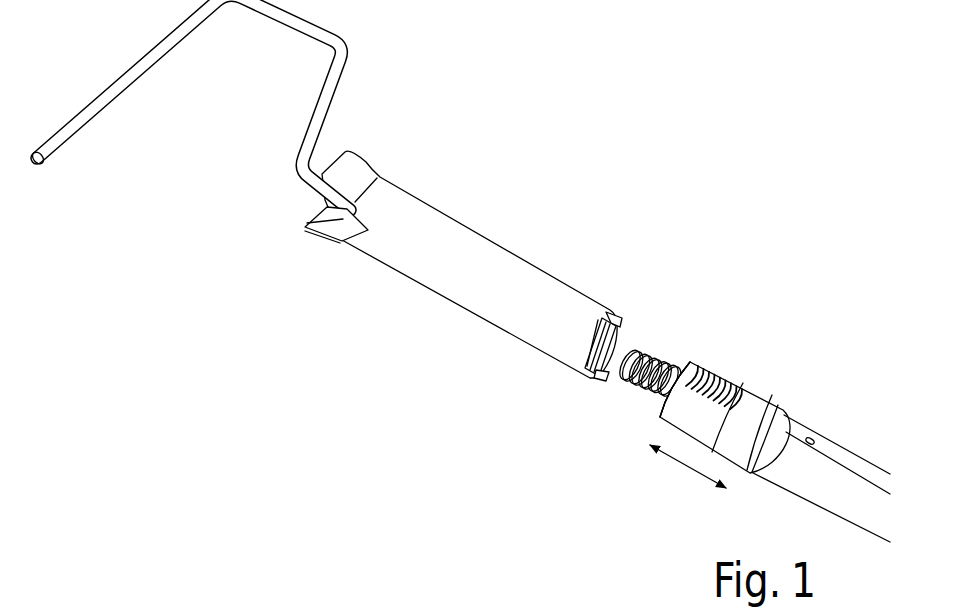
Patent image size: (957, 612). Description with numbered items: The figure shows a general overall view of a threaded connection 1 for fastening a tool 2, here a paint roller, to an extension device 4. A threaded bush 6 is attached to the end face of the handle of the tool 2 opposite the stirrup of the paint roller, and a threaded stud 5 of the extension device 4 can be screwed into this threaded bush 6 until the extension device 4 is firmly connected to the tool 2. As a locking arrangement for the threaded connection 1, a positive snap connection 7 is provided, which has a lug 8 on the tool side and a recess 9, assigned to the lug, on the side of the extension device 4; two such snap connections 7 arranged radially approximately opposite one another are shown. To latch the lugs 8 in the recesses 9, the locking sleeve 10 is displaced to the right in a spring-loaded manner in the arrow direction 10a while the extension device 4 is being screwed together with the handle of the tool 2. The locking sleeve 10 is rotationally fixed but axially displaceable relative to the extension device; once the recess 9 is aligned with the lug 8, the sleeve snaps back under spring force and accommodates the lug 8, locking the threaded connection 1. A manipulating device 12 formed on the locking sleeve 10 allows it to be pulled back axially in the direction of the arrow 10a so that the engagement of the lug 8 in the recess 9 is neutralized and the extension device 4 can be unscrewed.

The threaded connection 1 is at (460, 271).
The tool 2 is at (523, 212).
The extension device 4 is at (748, 359).
The threaded stud 5 is at (673, 305).
The threaded bush 6 is at (592, 352).
The positive snap connection 7 is at (675, 355).
The lug 8 is at (604, 313).
The recess 9 is at (683, 354).
The locking sleeve 10 is at (760, 400).
The arrow direction 10a is at (680, 470).
The manipulating device 12 is at (738, 366).